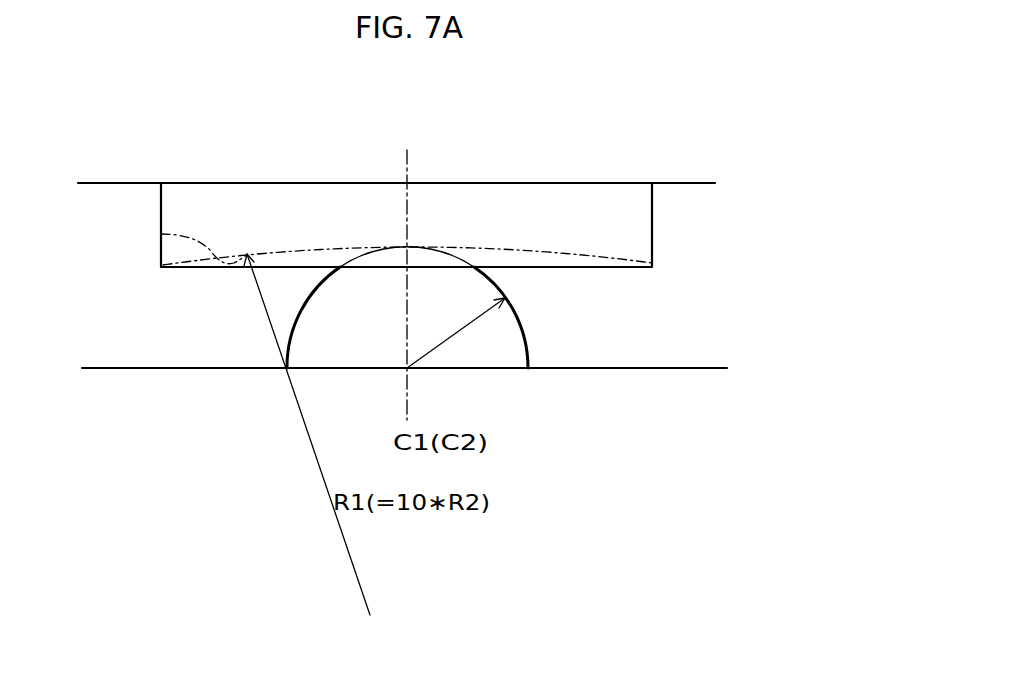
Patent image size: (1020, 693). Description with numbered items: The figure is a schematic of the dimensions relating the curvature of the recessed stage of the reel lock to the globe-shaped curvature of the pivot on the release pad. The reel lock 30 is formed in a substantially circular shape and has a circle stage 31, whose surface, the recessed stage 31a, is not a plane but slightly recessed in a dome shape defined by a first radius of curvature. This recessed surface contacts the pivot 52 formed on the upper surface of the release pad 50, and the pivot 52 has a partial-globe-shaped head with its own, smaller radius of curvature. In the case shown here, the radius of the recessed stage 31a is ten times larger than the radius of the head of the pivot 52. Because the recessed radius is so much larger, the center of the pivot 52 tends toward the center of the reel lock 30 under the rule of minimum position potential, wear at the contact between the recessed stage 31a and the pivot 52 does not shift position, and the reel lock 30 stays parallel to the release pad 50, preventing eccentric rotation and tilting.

The reel lock 30 is at (710, 148).
The circle stage 31 is at (161, 213).
The recessed stage 31a is at (161, 234).
The release pad 50 is at (676, 398).
The pivot 52 is at (527, 335).